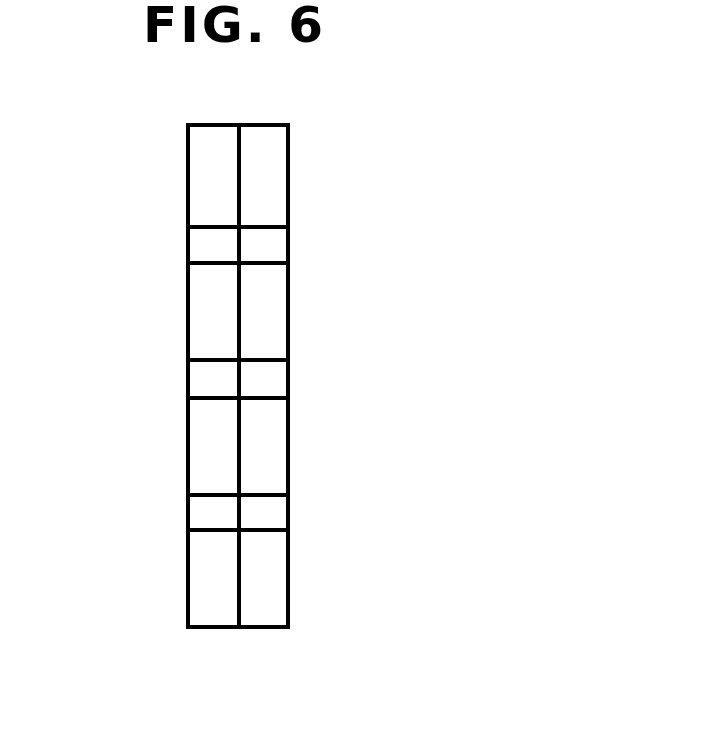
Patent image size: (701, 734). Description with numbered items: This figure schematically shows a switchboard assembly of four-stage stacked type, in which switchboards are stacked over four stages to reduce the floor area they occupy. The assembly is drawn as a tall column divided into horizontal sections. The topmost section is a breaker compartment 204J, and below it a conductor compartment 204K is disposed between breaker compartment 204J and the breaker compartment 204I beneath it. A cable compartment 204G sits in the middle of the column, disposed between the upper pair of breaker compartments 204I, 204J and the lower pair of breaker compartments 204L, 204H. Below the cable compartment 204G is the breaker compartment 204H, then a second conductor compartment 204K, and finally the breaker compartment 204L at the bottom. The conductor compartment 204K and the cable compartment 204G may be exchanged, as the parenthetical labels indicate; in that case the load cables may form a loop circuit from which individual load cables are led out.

The breaker compartment 204J is at (205, 192).
The conductor compartment 204K is at (270, 244).
The breaker compartment 204I is at (200, 325).
The cable compartment 204G is at (270, 375).
The breaker compartment 204H is at (205, 452).
The breaker compartment 204L is at (205, 584).